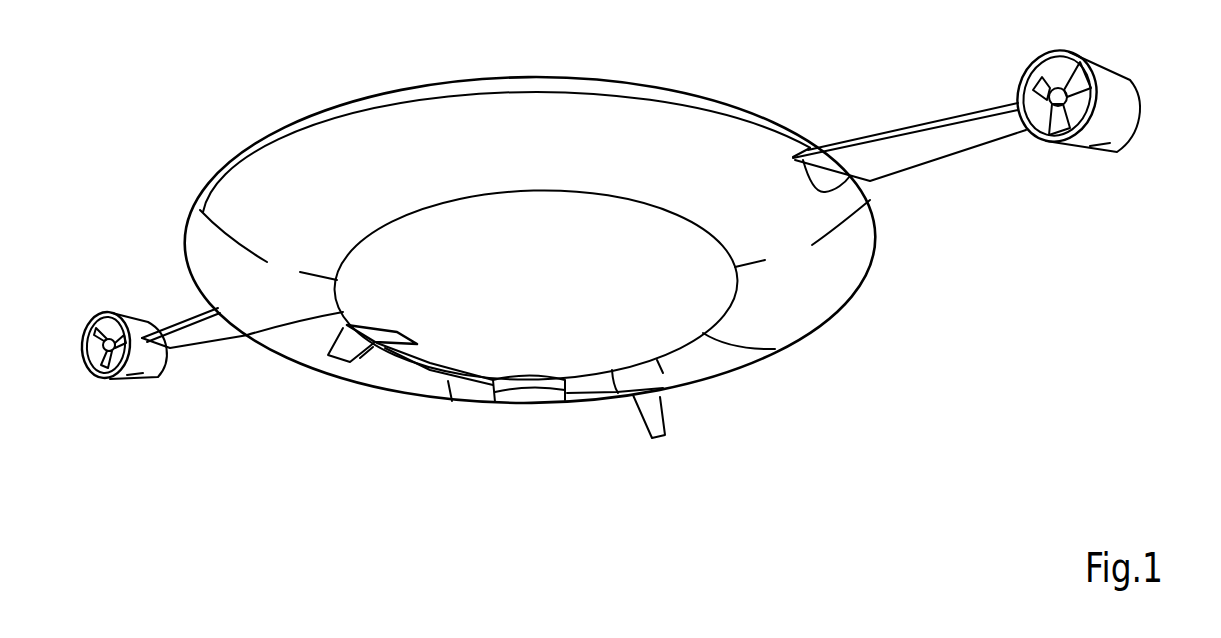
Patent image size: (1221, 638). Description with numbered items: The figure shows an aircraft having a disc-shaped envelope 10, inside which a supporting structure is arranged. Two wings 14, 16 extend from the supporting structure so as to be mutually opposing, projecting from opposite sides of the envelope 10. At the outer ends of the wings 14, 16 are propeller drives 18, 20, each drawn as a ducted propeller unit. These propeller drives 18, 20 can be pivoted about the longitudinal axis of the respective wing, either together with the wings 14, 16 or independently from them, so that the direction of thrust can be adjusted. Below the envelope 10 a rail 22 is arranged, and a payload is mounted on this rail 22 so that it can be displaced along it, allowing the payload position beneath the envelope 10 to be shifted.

The envelope 10 is at (507, 108).
The wing 14 is at (908, 140).
The wing 16 is at (180, 322).
The propeller drive 18 is at (1118, 90).
The propeller drive 20 is at (131, 318).
The rail 22 is at (448, 403).